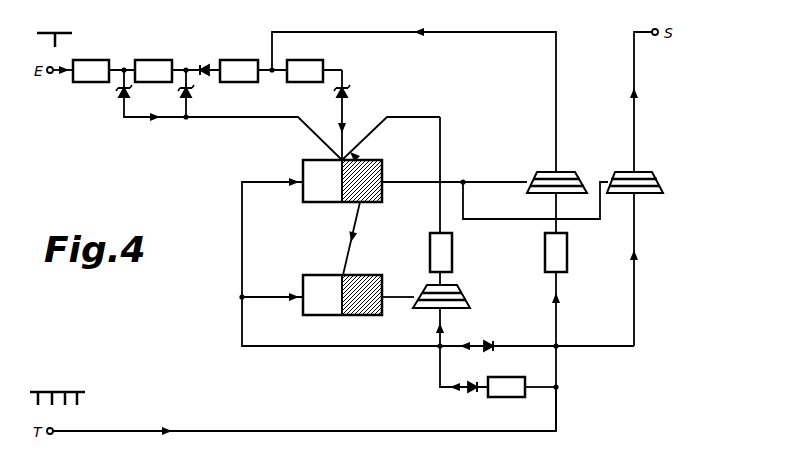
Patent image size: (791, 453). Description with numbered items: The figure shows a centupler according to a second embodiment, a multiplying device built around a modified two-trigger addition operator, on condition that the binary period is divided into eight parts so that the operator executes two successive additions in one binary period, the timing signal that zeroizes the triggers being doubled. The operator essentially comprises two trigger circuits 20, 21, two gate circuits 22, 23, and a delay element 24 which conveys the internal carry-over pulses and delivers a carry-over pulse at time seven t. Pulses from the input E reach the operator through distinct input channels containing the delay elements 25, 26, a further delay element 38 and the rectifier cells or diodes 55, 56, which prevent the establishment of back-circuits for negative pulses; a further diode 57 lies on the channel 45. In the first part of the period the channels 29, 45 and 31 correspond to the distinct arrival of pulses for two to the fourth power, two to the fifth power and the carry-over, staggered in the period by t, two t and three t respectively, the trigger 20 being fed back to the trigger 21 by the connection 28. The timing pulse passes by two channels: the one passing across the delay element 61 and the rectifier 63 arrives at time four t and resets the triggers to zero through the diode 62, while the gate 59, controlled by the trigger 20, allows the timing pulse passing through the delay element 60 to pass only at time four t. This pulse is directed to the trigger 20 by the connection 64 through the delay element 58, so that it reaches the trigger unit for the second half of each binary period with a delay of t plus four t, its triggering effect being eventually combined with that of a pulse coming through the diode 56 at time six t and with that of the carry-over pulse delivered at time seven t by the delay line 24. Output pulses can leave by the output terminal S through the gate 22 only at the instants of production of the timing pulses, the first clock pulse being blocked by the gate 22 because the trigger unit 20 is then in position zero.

The trigger circuit 20 is at (322, 204).
The trigger circuit 21 is at (327, 317).
The gate circuit 22 is at (652, 172).
The gate circuit 23 is at (466, 294).
The delay element 24 is at (452, 246).
The delay element 25 is at (90, 60).
The delay element 26 is at (153, 60).
The feedback line 28 is at (242, 212).
The input channel 29 is at (190, 84).
The channel 31 is at (440, 135).
The delay element p 38 is at (231, 60).
The channel 45 is at (342, 77).
The rectifier cell 55 is at (181, 96).
The rectifier cell 56 is at (119, 96).
The diode 57 is at (347, 93).
The delay element 58 is at (300, 60).
The gate 59 is at (540, 173).
The delay element 60 is at (567, 246).
The delay element 61 is at (513, 398).
The diode 62 is at (490, 341).
The rectifier 63 is at (472, 394).
The connection 64 is at (452, 32).